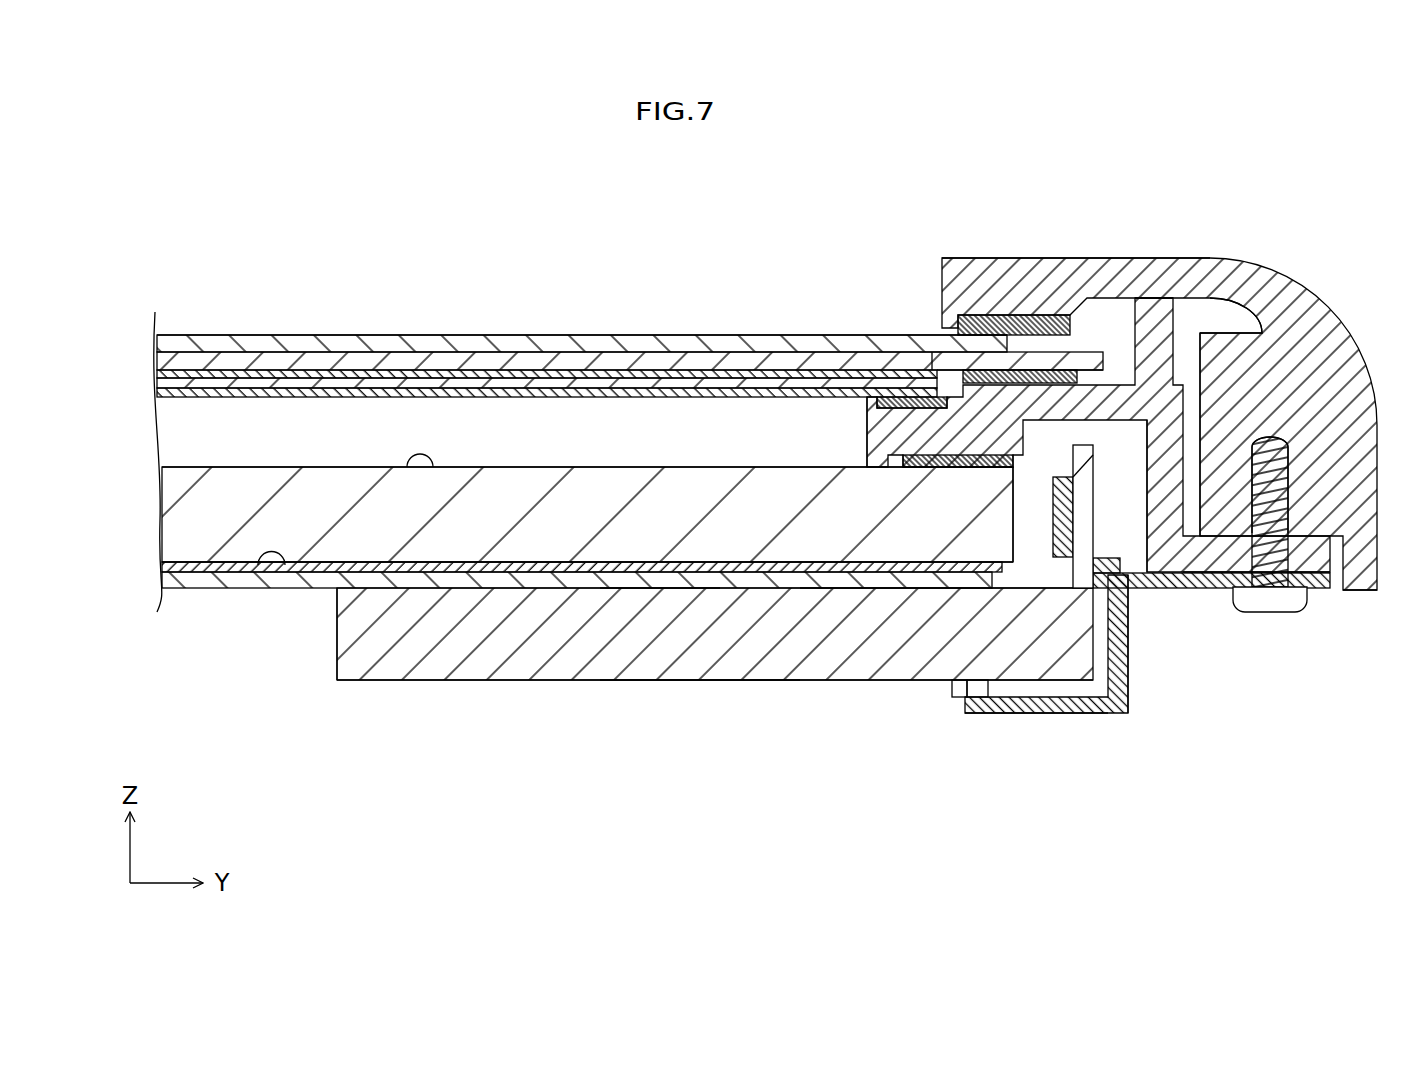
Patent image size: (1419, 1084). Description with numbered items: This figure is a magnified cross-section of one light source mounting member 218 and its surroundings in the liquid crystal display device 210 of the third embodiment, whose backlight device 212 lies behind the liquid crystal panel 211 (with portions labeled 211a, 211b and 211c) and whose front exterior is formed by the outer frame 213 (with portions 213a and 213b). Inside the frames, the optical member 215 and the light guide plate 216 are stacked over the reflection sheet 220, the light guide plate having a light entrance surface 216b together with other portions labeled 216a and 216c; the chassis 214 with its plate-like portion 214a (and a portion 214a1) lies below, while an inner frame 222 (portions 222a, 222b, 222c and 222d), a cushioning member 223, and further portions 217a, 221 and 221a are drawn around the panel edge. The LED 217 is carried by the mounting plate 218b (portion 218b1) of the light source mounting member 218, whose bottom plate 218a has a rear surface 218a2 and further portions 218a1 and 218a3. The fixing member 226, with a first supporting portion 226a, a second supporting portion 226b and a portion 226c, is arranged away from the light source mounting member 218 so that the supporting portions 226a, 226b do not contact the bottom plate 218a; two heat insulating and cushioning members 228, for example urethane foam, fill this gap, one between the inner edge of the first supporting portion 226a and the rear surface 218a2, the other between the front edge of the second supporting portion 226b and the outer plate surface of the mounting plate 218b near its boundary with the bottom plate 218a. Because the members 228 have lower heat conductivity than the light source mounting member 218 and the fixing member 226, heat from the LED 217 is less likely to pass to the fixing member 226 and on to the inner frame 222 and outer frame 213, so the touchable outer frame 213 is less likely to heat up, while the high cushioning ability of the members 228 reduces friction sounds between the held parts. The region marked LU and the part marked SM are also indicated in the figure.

The liquid crystal display device 210 is at (348, 242).
The liquid crystal panel 211 is at (630, 297).
The CF substrate 211a is at (718, 347).
The array substrate 211b is at (736, 267).
The polarizing plate 211c is at (567, 335).
The backlight device 212 is at (522, 800).
The outer frame 213 is at (1155, 407).
The bezel top plate 213a is at (1015, 275).
The bezel bottom portion 213b is at (1357, 592).
The chassis 214 is at (574, 625).
The plate-like portion 214a is at (228, 575).
The reflection sheet protrusion 214a1 is at (283, 566).
The optical member 215 is at (460, 380).
The light guide plate 216 is at (590, 644).
The light exit surface 216a is at (420, 465).
The light entrance surface 216b is at (1018, 522).
The opposite plate surface 216c is at (600, 563).
The LED 217 is at (1070, 490).
The frame portion 217a is at (973, 437).
The light source mounting member 218 is at (814, 621).
The bottom plate 218a is at (792, 650).
The chassis bottom plate upper surface 218a1 is at (872, 590).
The rear surface 218a2 is at (720, 680).
The chassis bottom plate end 218a3 is at (337, 628).
The mounting plate 218b is at (1169, 618).
The chassis side plate portion 218b1 is at (1052, 478).
The reflection sheet 220 is at (655, 588).
The frame member 221 is at (1266, 365).
The screw boss 221a is at (1262, 452).
The inner frame 222 is at (1070, 442).
The frame panel support portion 222a is at (903, 432).
The frame bottom flange 222b is at (1317, 553).
The frame side wall 222c is at (1165, 505).
The frame top portion 222d is at (1153, 313).
The cushioning member 223 is at (935, 398).
The fixing member 226 is at (1119, 653).
The first supporting portion 226a is at (1083, 507).
The second supporting portion 226b is at (1128, 705).
The heat dissipation member side plate 226c is at (1128, 640).
The heat insulating and cushioning member 228 is at (955, 690).
The light source unit LU is at (1068, 436).
The screw member SM is at (1268, 608).